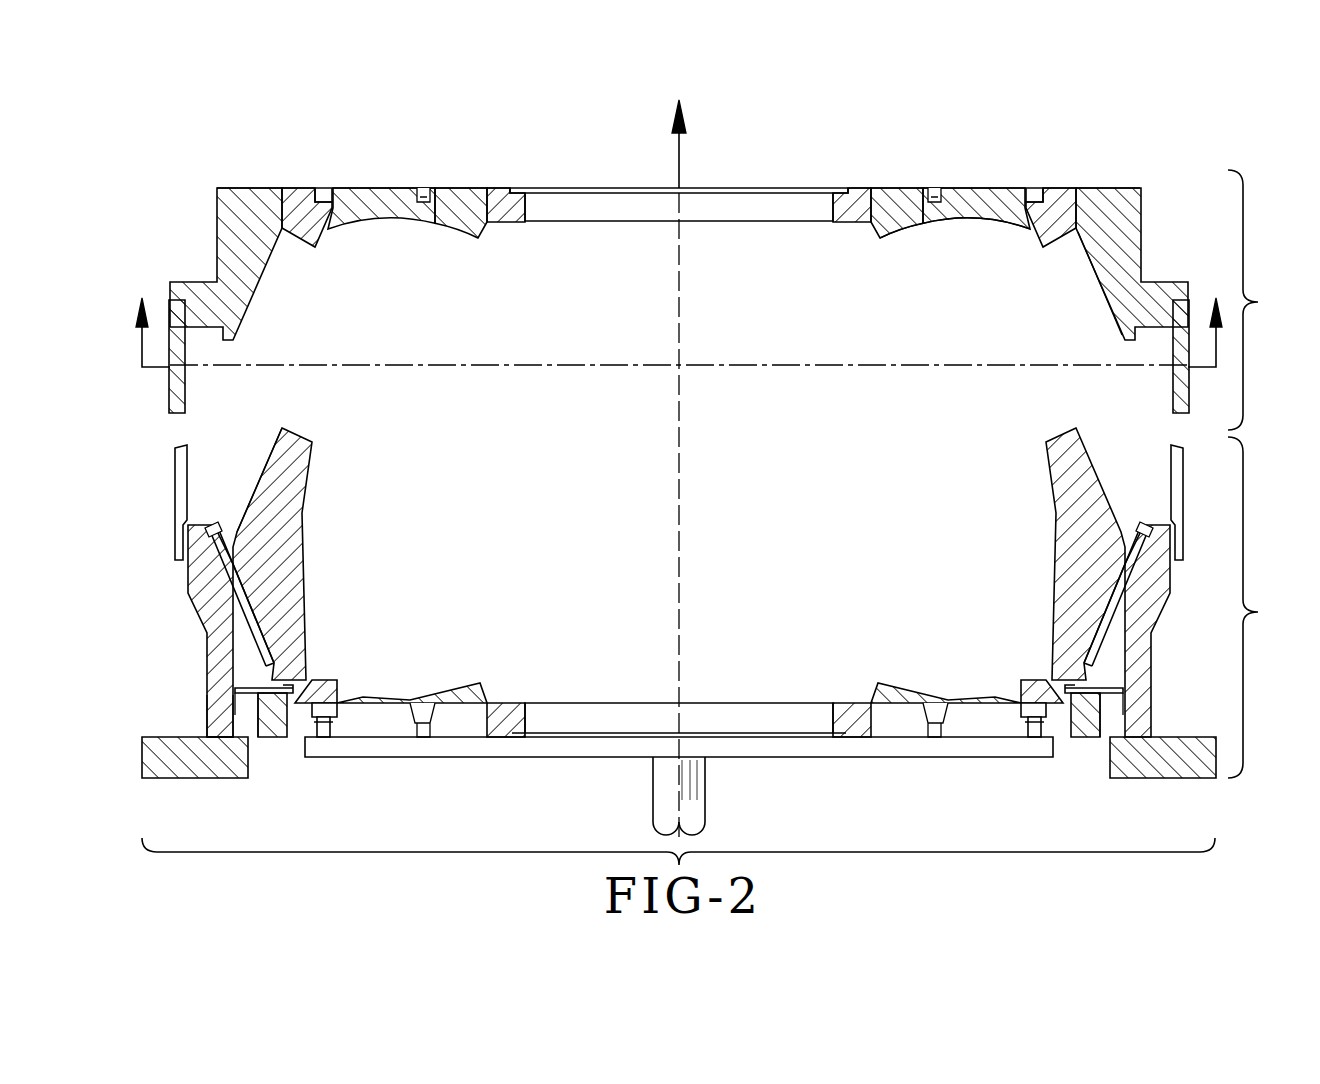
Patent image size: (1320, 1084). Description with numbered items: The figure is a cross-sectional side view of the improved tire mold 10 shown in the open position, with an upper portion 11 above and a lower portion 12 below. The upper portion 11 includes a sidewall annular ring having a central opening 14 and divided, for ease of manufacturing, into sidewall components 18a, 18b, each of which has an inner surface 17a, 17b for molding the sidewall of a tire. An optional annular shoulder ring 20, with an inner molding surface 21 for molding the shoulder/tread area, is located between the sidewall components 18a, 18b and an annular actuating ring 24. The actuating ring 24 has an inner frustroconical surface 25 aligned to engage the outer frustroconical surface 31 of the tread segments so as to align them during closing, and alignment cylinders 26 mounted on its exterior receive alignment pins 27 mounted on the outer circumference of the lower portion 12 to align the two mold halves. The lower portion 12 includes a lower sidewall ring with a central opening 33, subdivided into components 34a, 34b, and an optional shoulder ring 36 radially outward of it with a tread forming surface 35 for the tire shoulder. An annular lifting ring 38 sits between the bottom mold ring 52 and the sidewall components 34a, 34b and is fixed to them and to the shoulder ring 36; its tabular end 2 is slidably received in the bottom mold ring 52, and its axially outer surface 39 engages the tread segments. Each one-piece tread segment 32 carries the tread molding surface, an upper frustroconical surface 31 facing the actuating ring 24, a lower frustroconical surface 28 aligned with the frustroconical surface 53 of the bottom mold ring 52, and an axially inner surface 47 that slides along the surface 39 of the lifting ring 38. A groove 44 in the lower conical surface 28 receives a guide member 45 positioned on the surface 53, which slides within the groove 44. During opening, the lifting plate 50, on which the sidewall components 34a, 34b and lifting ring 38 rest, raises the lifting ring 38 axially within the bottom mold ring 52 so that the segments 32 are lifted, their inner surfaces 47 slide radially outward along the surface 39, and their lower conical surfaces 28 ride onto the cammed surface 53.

The tabular end 2 is at (240, 708).
The tire mold 10 is at (240, 167).
The upper portion 11 is at (1259, 300).
The lower portion 12 is at (1259, 607).
The central opening 14 is at (708, 196).
The inner surface 17a is at (902, 232).
The inner surface 17b is at (982, 228).
The sidewall component 18a is at (480, 192).
The sidewall component 18b is at (368, 192).
The annular shoulder ring 20 is at (305, 186).
The inner molding surface 21 is at (322, 240).
The annular actuating ring 24 is at (230, 203).
The inner frustroconical surface 25 is at (1116, 323).
The alignment cylinder 26 is at (178, 383).
The alignment pin 27 is at (182, 452).
The lower frustroconical surface 28 is at (268, 682).
The outer frustroconical surface 31 is at (242, 520).
The tread segment 32 is at (296, 522).
The central opening 33 is at (640, 718).
The lower sidewall ring component 34a is at (503, 715).
The lower sidewall ring component 34b is at (400, 705).
The tread forming surface 35 is at (318, 696).
The shoulder ring 36 is at (312, 688).
The annular lifting ring 38 is at (328, 718).
The axially outer surface 39 is at (245, 692).
The groove 44 is at (252, 621).
The guide member 45 is at (215, 540).
The axially inner surface 47 is at (285, 703).
The lifting plate 50 is at (790, 758).
The bottom mold ring 52 is at (215, 718).
The frustroconical surface 53 is at (225, 580).